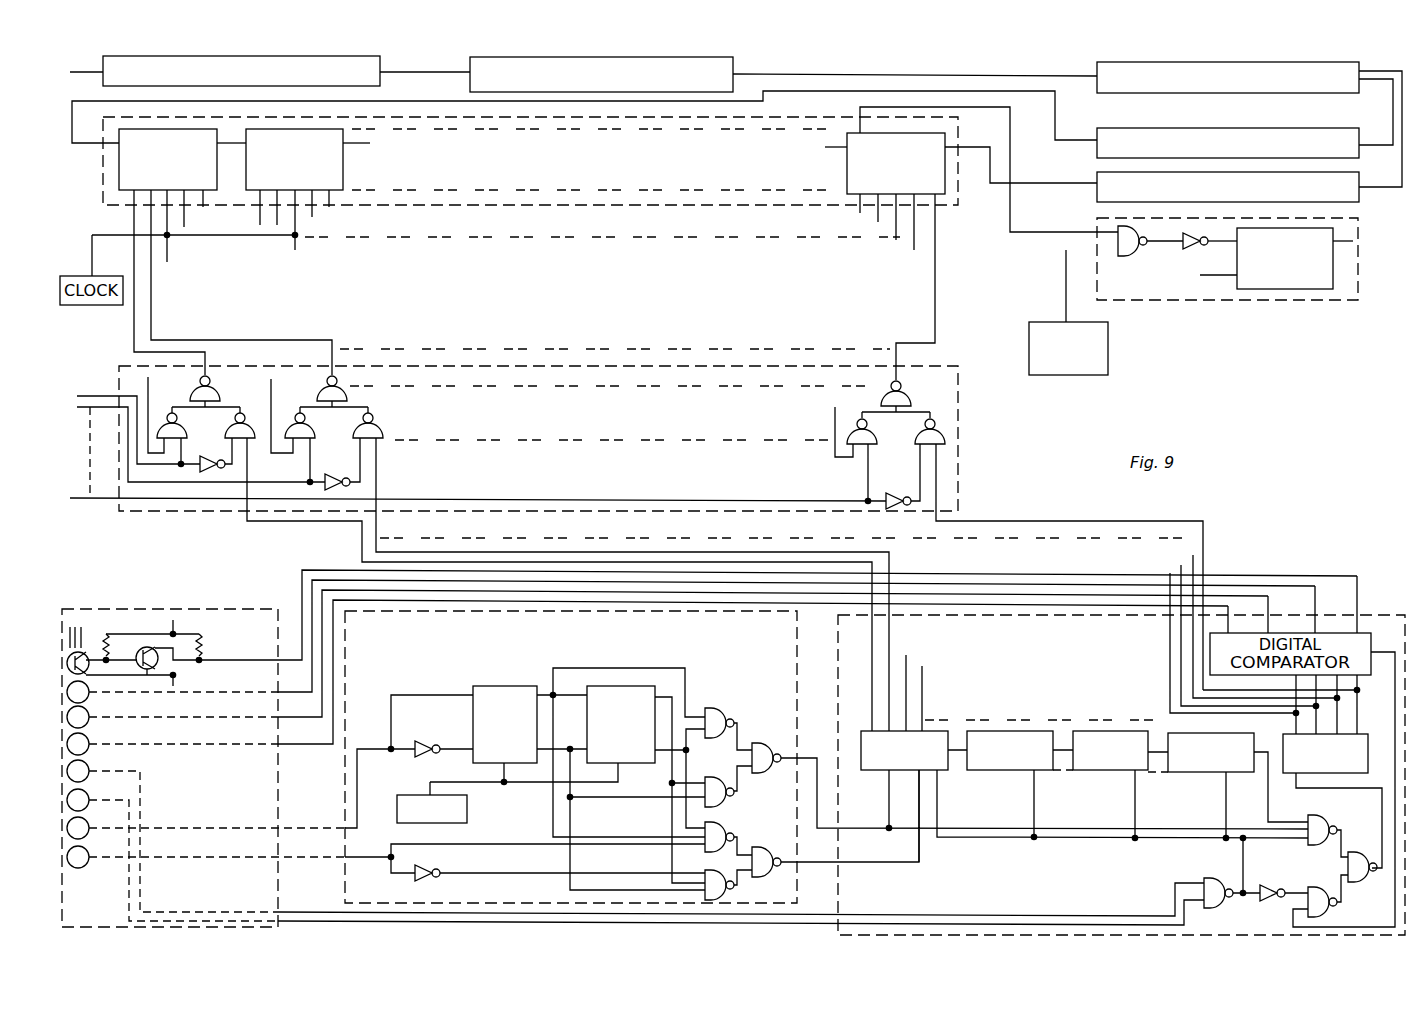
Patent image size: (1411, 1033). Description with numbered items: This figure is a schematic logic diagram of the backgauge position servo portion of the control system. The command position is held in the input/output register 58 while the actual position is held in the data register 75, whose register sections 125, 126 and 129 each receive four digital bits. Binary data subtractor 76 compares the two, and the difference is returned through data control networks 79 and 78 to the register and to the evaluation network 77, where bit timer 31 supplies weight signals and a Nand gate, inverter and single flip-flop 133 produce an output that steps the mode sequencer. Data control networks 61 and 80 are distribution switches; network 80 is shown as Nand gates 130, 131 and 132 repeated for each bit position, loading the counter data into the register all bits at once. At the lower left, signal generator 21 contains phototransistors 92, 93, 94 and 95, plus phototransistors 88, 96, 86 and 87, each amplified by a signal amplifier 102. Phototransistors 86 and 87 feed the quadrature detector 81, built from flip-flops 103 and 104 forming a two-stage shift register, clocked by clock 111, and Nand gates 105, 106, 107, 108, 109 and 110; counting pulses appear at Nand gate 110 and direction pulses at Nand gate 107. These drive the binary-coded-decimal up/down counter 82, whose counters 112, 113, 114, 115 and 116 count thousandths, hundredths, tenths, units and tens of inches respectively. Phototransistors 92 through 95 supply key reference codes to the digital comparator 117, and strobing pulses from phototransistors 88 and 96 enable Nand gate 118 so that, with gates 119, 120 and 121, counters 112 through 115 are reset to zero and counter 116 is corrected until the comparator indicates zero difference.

The signal generator 21 is at (178, 609).
The bit timer 31 is at (1108, 337).
The input/output register 58 is at (380, 80).
The data control network 61 is at (733, 72).
The data register 75 is at (940, 205).
The binary data subtractor 76 is at (1122, 87).
The evaluation network 77 is at (1262, 300).
The data control network 78 is at (1097, 174).
The data control network 79 is at (1246, 128).
The data control network 80 is at (958, 393).
The quadrature detector 81 is at (797, 670).
The binary-coded-decimal up/down counter 82 is at (839, 706).
The phototransistor 86 is at (86, 835).
The phototransistor 87 is at (86, 864).
The phototransistor 88 is at (86, 778).
The phototransistor device 92 is at (85, 654).
The phototransistor device 93 is at (86, 699).
The phototransistor device 94 is at (86, 724).
The phototransistor device 95 is at (86, 751).
The phototransistor 96 is at (86, 807).
The signal amplifier 102 is at (160, 662).
The flip-flop 103 is at (500, 690).
The flip-flop 104 is at (620, 763).
The Nand gate 105 is at (714, 822).
The Nand gate 106 is at (728, 890).
The Nand gate 107 is at (770, 836).
The Nand gate 108 is at (706, 706).
The Nand gate 109 is at (718, 776).
The Nand gate 110 is at (758, 740).
The clock 111 is at (467, 808).
The counter 112 is at (917, 761).
The counter 113 is at (1023, 761).
The decade counter 114 is at (1123, 761).
The decade counter 115 is at (1224, 763).
The decade counter 116 is at (1338, 764).
The digital comparator 117 is at (1374, 672).
The Nand gate 118 is at (1218, 878).
The Nand gate 119 is at (1319, 889).
The Nand gate 120 is at (1333, 823).
The Nand gate 121 is at (1360, 888).
The register section 125 is at (154, 170).
The register section 126 is at (281, 170).
The register section 129 is at (882, 173).
The Nand gate 130 is at (181, 432).
The Nand gate 131 is at (190, 388).
The Nand gate 132 is at (254, 410).
The flip-flop 133 is at (1271, 268).